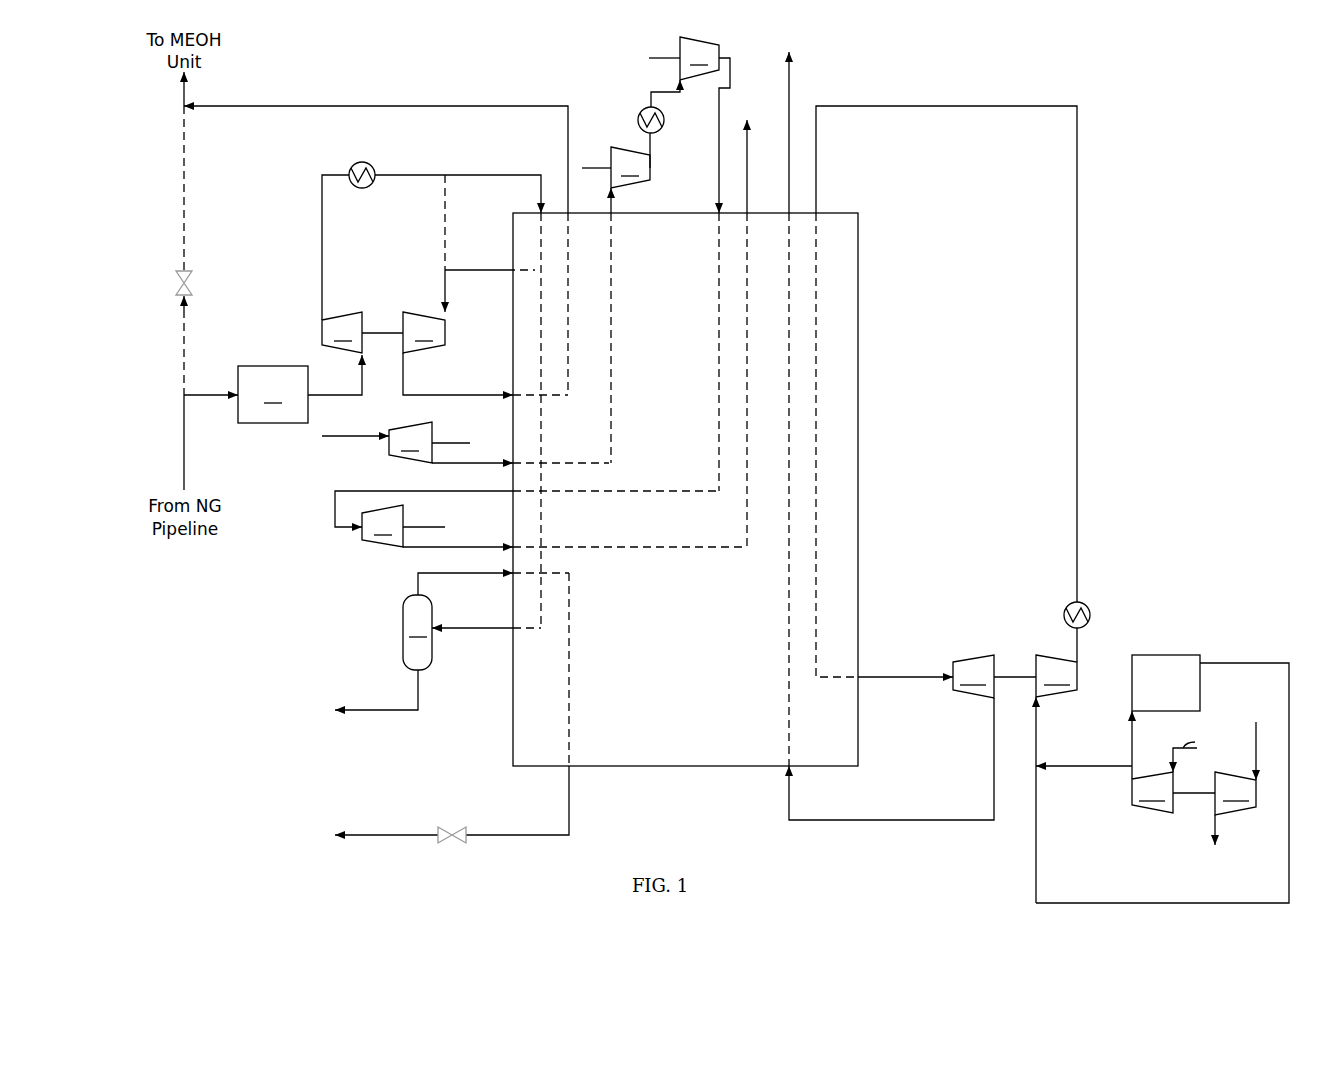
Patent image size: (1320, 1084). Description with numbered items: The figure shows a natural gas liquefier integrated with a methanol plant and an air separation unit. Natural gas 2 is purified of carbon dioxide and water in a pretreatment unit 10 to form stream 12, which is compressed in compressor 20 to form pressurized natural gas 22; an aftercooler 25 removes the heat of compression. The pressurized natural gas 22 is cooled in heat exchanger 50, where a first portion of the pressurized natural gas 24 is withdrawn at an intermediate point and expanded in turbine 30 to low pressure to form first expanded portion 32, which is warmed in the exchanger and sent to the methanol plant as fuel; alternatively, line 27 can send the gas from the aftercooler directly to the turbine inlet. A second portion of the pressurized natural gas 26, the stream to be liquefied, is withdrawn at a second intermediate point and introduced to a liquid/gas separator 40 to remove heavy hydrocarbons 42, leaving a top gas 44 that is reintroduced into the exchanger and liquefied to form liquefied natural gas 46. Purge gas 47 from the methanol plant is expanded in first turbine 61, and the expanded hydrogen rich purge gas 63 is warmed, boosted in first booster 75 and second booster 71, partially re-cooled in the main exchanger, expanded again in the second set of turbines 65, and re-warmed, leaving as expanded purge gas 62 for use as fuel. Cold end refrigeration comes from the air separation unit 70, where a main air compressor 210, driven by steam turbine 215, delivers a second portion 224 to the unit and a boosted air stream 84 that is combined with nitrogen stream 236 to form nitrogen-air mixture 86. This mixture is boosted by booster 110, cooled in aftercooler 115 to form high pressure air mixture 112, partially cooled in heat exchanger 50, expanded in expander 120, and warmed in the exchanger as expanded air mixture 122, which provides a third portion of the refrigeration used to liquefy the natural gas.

The natural gas 2 is at (196, 394).
The pretreatment unit 10 is at (273, 394).
The stream 12 is at (350, 394).
The compressor 20 is at (362, 332).
The pressurized natural gas 22 is at (322, 228).
The first portion of the pressurized natural gas 24 is at (505, 268).
The aftercooler 25 is at (368, 164).
The second portion of the pressurized natural gas 26 is at (465, 628).
The line 27 is at (445, 224).
The turbine 30 is at (424, 332).
The first expanded portion 32 is at (452, 105).
The separator vessel 40 is at (417, 632).
The heavy hydrocarbons 42 is at (395, 710).
The top gas 44 is at (476, 572).
The liquefied natural gas (LNG) 46 is at (490, 835).
The feed stream to compressor 47 is at (360, 437).
The heat exchanger 50 is at (858, 425).
The first turbine 61 is at (429, 441).
The expanded purge gas 62 is at (747, 172).
The expanded hydrogen rich purge gas 63 is at (505, 463).
The second set of turbines 65 is at (424, 519).
The air separation unit 70 is at (1172, 655).
The second booster 71 is at (621, 262).
The first booster 75 is at (631, 271).
The boosted air stream 84 is at (1068, 765).
The nitrogen-air mixture 86 is at (1036, 718).
The booster 110 is at (1056, 676).
The compressed nitrogen stream 112 is at (1077, 346).
The aftercooler 115 is at (1090, 612).
The expander 120 is at (994, 676).
The expanded air mixture 122 is at (790, 108).
The main air compressor (MAC) 210 is at (1194, 773).
The steam turbine 215 is at (1239, 788).
The second portion 224 is at (1132, 760).
The nitrogen stream 236 is at (1050, 903).